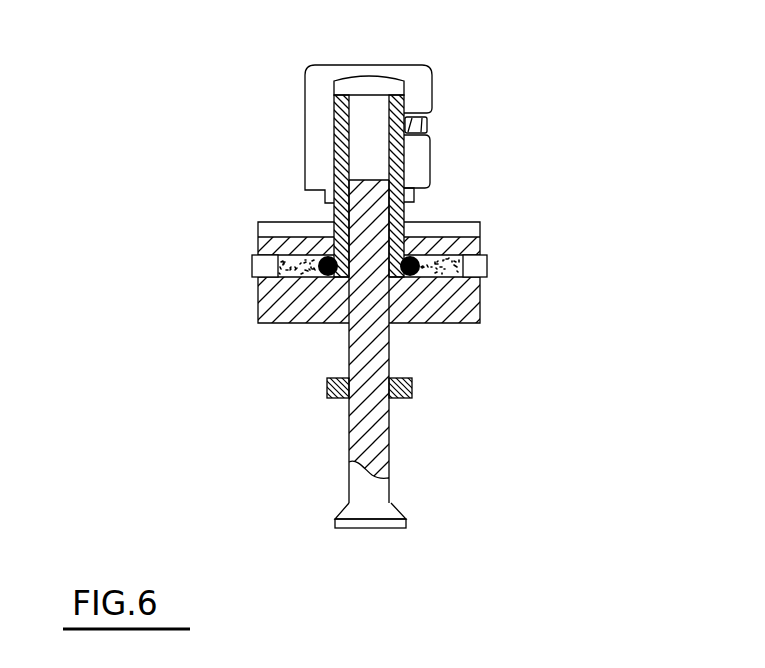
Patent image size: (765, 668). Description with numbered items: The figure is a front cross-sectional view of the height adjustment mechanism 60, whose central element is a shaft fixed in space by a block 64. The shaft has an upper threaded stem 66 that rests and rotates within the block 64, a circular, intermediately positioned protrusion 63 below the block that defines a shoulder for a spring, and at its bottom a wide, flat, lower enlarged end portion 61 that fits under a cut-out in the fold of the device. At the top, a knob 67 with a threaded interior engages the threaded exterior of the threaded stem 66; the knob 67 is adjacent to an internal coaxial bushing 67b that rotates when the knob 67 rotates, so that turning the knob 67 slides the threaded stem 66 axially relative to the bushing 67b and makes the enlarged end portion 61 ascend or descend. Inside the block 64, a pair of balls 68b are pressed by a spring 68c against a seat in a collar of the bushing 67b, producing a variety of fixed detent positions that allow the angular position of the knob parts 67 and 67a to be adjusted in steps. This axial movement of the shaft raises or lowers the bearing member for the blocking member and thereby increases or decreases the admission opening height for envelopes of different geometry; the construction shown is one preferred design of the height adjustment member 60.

The height adjustment mechanism 60 is at (494, 123).
The lower enlarged end portion 61 is at (357, 524).
The circular protrusion 63 is at (327, 390).
The block 64 is at (478, 242).
The threaded stem 66 is at (334, 210).
The knob 67 is at (416, 65).
The knob part 67a is at (333, 135).
The internal coaxial bushing 67b is at (415, 238).
The balls 68b is at (293, 272).
The spring 68c is at (484, 278).